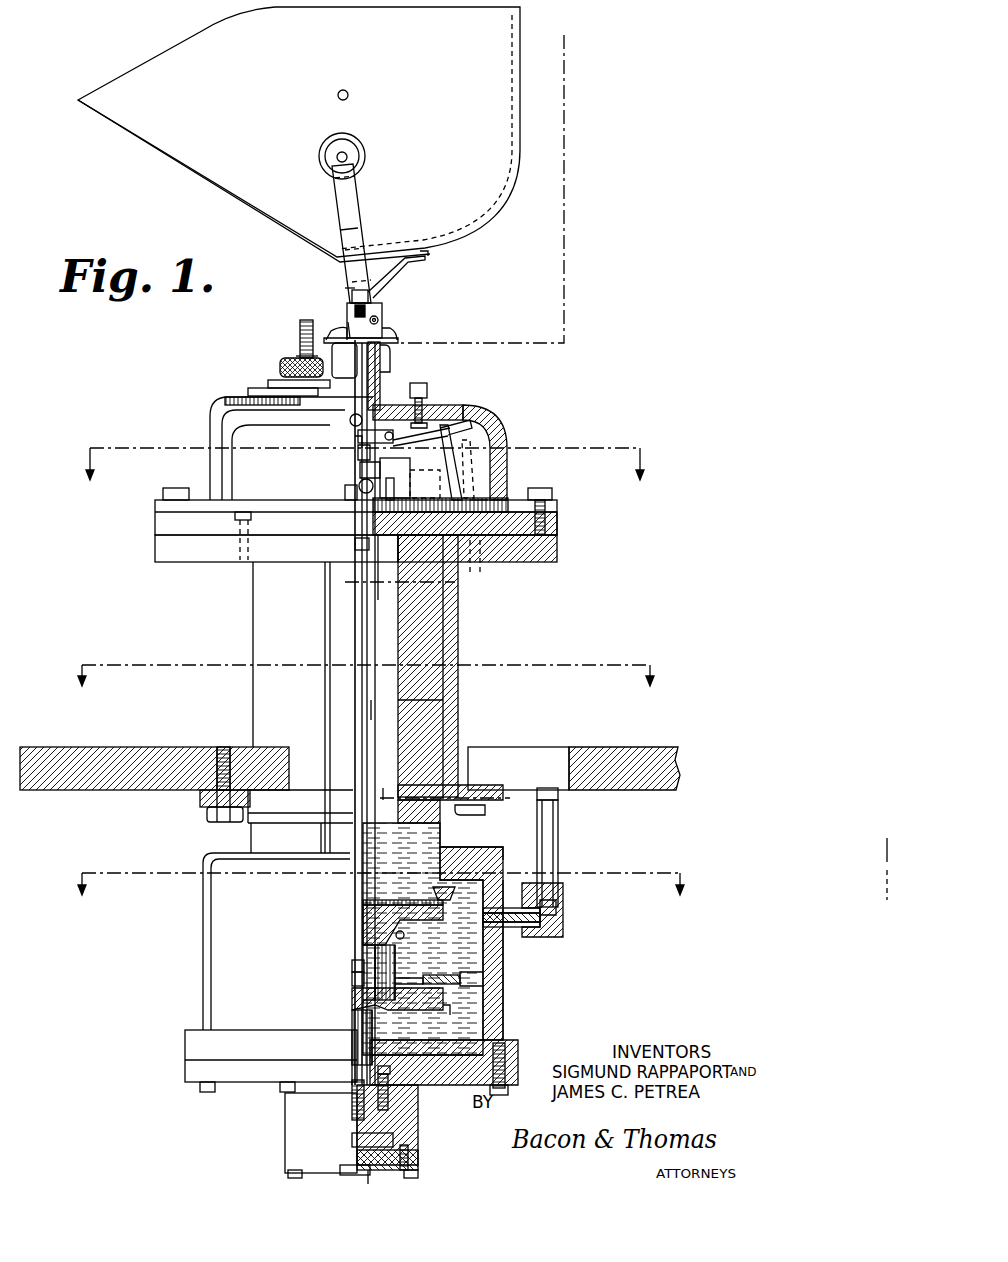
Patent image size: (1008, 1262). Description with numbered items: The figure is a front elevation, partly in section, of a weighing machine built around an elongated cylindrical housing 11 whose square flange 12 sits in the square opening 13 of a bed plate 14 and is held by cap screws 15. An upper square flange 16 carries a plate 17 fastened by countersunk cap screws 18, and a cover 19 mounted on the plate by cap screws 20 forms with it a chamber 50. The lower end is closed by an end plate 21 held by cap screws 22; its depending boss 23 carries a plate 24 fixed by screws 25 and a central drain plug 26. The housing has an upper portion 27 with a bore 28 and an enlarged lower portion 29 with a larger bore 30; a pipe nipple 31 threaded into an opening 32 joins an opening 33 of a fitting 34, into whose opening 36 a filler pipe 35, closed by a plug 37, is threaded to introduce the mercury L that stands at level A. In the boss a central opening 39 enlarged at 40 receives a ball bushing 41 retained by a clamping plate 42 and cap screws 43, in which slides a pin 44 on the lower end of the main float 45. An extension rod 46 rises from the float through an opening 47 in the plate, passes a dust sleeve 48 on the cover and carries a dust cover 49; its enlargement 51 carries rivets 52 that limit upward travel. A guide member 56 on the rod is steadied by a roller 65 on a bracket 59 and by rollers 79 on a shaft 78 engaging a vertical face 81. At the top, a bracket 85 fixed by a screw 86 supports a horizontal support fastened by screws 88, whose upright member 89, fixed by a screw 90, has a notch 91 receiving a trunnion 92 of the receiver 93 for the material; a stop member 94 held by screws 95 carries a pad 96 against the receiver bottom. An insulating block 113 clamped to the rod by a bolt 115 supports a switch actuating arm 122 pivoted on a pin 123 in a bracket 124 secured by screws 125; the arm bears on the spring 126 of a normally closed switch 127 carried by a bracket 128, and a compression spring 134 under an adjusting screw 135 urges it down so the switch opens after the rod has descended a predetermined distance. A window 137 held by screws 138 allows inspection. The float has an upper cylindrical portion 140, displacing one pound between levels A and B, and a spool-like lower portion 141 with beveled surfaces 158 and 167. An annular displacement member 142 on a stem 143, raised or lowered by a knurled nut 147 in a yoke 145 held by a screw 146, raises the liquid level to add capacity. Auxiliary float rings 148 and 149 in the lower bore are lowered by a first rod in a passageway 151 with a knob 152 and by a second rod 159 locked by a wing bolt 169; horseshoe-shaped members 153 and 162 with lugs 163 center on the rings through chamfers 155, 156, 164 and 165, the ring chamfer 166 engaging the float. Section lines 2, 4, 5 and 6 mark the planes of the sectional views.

The section line 2- 2 is at (568, 47).
The section line 4- 4 is at (364, 471).
The section line 5- 5 is at (365, 686).
The section line 6- 6 is at (380, 894).
The housing 11 is at (462, 634).
The flange 12 is at (205, 802).
The opening 13 is at (545, 747).
The bed plate 14 is at (665, 747).
The cap screws 15 is at (213, 824).
The flange 16 is at (560, 553).
The plate 17 is at (560, 524).
The countersunk cap screws 18 is at (242, 540).
The cover 19 is at (212, 436).
The cap screws 20 is at (178, 488).
The end plate 21 is at (185, 1070).
The cap screws 22 is at (510, 1062).
The cylindrical boss 23 is at (420, 1132).
The plate 24 is at (418, 1158).
The screws 25 is at (285, 1172).
The drain plug 26 is at (342, 1172).
The upper portion 27 is at (462, 733).
The internal bore 28 is at (462, 838).
The lower portion 29 is at (505, 972).
The internal bore 30 is at (506, 1020).
The pipe nipple 31 is at (522, 930).
The opening 32 is at (483, 915).
The opening 33 is at (505, 905).
The pipe fitting 34 is at (568, 930).
The filler pipe 35 is at (560, 838).
The opening 36 is at (565, 900).
The plug 37 is at (560, 798).
The central opening 39 is at (352, 1140).
The enlarged portion 40 is at (378, 1070).
The ball bushing 41 is at (350, 1102).
The clamping plate 42 is at (392, 1090).
The cap screws 43 is at (392, 1060).
The pin 44 is at (352, 1050).
The main float 45 is at (385, 1030).
The extension rod 46 is at (370, 590).
The opening 47 is at (358, 523).
The dust sleeve 48 is at (380, 380).
The dust cover 49 is at (388, 352).
The chamber 50 is at (500, 468).
The enlargement 51 is at (356, 545).
The rivets 52 is at (385, 540).
The guide member 56 is at (358, 452).
The bracket 59 is at (395, 468).
The roller 65 is at (394, 496).
The shaft 78 is at (390, 500).
The rollers 79 is at (360, 482).
The vertical face 81 is at (358, 466).
The bracket 85 is at (357, 312).
The screw 86 is at (385, 316).
The screws 88 is at (350, 328).
The upright member 89 is at (372, 218).
The screw 90 is at (345, 292).
The notch 91 is at (355, 148).
The trunnion 92 is at (334, 148).
The receiver 93 is at (124, 90).
The stop member 94 is at (375, 283).
The screws 95 is at (352, 292).
The pad 96 is at (432, 258).
The insulating block 113 is at (356, 440).
The bolt 115 is at (388, 436).
The switch actuating arm 122 is at (455, 405).
The pin 123 is at (476, 416).
The bracket 124 is at (492, 485).
The screws 125 is at (426, 496).
The spring 126 is at (438, 470).
The micro switch 127 is at (388, 446).
The bracket 128 is at (456, 458).
The compression spring 134 is at (428, 400).
The screw 135 is at (420, 382).
The window 137 is at (222, 398).
The screws 138 is at (344, 375).
The upper cylindrical portion 140 is at (372, 695).
The lower portion 141 is at (396, 960).
The displacement member 142 is at (440, 705).
The stem 143 is at (303, 324).
The yoke 145 is at (270, 382).
The screw 146 is at (280, 372).
The knurled nut 147 is at (298, 362).
The auxiliary float ring 148 is at (412, 935).
The auxiliary float ring 149 is at (430, 1030).
The passageway 151 is at (400, 912).
The knob 152 is at (397, 334).
The horseshoe-shaped member 153 is at (452, 892).
The chamfered corner 155 is at (430, 904).
The chamfered portion 156 is at (438, 892).
The beveled surface 158 is at (400, 935).
The rod 159 is at (362, 945).
The horseshoe-shaped member 162 is at (447, 975).
The lugs 163 is at (462, 978).
The beveled corner 164 is at (448, 1000).
The complemental surface 165 is at (434, 978).
The beveled corner 166 is at (362, 998).
The beveled surface 167 is at (372, 1022).
The wing bolt 169 is at (350, 418).
The liquid level A is at (452, 799).
The liquid level B is at (407, 582).
The liquid medium L is at (384, 785).